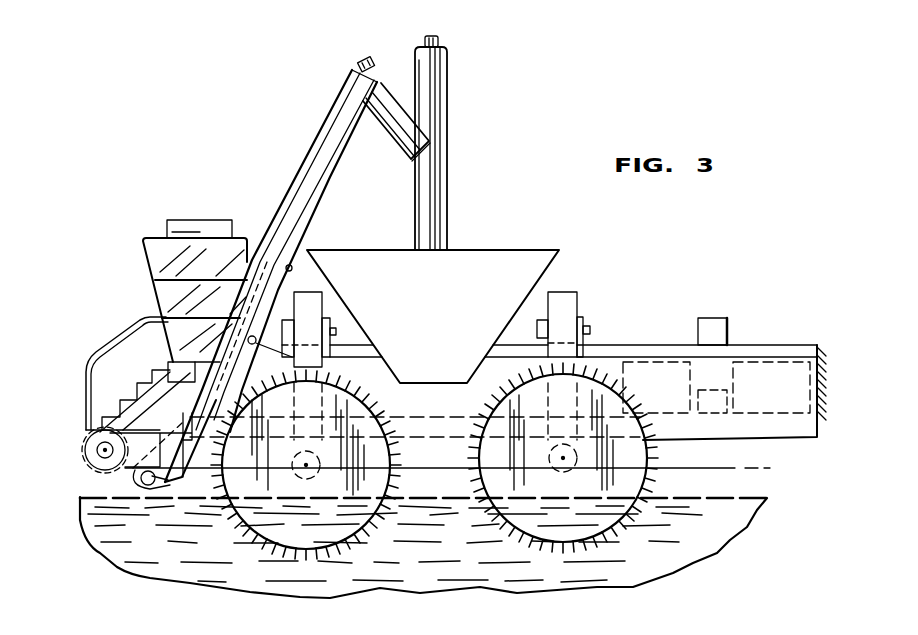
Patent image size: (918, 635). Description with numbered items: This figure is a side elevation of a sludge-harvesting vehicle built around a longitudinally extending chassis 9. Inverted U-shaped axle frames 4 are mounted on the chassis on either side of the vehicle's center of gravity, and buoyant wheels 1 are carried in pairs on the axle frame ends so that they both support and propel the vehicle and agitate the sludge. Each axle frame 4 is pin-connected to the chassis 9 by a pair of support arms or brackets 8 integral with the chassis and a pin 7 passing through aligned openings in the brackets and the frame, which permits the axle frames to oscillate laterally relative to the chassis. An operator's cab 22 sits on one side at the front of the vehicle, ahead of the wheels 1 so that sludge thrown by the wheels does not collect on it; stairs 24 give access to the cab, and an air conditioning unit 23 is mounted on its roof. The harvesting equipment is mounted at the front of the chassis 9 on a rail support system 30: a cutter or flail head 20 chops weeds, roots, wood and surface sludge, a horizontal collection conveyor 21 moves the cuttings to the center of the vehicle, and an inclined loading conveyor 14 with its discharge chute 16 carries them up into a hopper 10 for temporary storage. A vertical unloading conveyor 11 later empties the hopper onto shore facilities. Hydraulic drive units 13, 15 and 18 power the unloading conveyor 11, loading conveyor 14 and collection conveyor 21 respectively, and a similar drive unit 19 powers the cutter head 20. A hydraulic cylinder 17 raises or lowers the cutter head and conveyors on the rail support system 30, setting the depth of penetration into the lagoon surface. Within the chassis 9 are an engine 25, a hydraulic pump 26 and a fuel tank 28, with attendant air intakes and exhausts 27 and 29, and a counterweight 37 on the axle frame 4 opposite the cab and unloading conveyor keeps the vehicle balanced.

The buoyant wheels 1 is at (388, 464).
The axle frames 4 is at (330, 362).
The pin 7 is at (336, 334).
The support arms or brackets 8 is at (330, 325).
The chassis 9 is at (651, 345).
The hopper 10 is at (475, 262).
The unloading conveyor 11 is at (448, 110).
The drive unit 13 is at (441, 36).
The loading conveyor 14 is at (322, 135).
The drive unit 15 is at (367, 60).
The discharge chute 16 is at (394, 132).
The hydraulic cylinder 17 is at (300, 260).
The drive unit 18 is at (186, 466).
The drive unit 19 is at (100, 455).
The cutter or flail head 20 is at (98, 447).
The horizontal collection conveyor 21 is at (140, 480).
The operator's cab 22 is at (143, 225).
The air conditioning unit 23 is at (200, 220).
The stairs 24 is at (122, 347).
The engine 25 is at (773, 368).
The hydraulic pump 26 is at (718, 385).
The air intakes and exhausts 27 is at (727, 320).
The fuel tank 28 is at (668, 367).
The air intakes and exhausts 29 is at (822, 345).
The rail support system 30 is at (191, 470).
The counterweight 37 is at (315, 305).